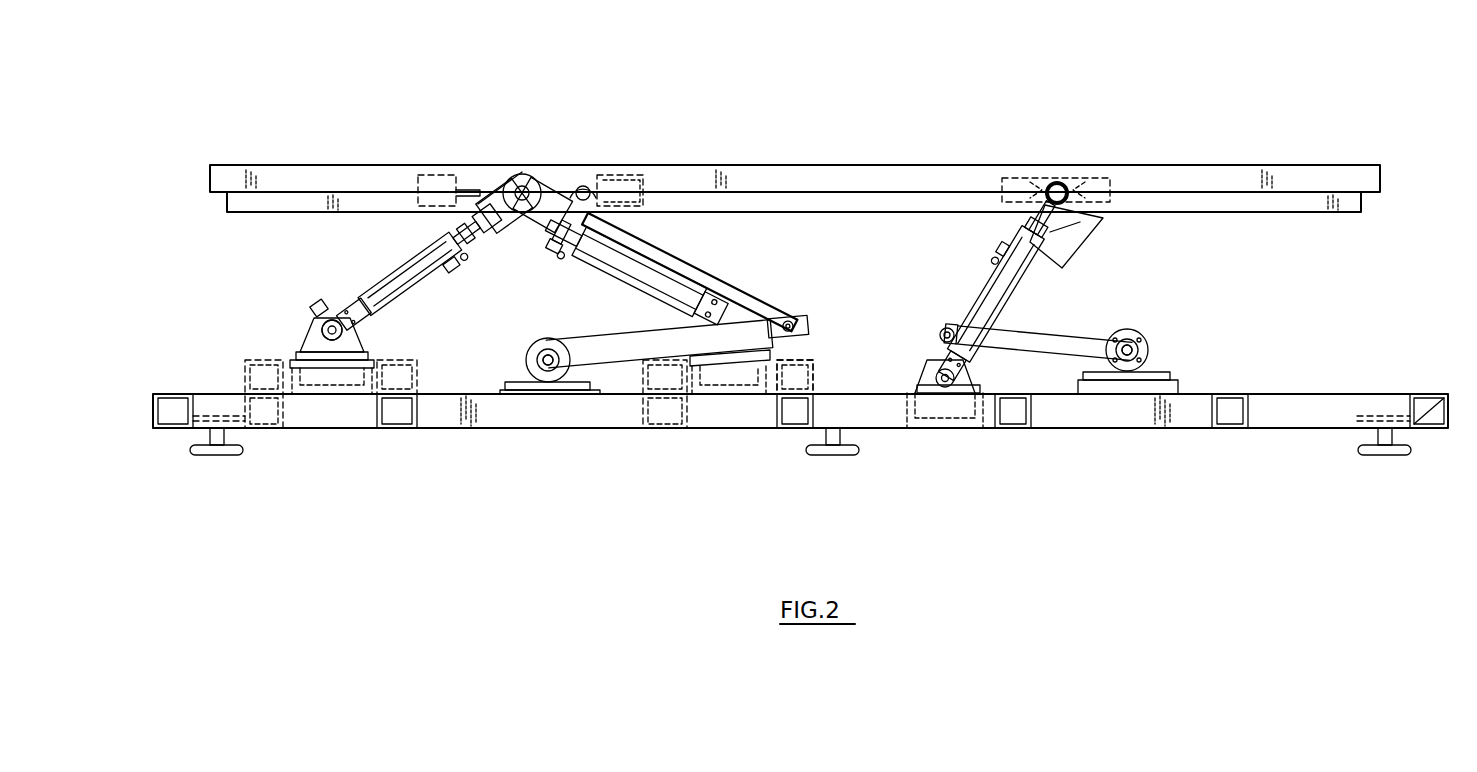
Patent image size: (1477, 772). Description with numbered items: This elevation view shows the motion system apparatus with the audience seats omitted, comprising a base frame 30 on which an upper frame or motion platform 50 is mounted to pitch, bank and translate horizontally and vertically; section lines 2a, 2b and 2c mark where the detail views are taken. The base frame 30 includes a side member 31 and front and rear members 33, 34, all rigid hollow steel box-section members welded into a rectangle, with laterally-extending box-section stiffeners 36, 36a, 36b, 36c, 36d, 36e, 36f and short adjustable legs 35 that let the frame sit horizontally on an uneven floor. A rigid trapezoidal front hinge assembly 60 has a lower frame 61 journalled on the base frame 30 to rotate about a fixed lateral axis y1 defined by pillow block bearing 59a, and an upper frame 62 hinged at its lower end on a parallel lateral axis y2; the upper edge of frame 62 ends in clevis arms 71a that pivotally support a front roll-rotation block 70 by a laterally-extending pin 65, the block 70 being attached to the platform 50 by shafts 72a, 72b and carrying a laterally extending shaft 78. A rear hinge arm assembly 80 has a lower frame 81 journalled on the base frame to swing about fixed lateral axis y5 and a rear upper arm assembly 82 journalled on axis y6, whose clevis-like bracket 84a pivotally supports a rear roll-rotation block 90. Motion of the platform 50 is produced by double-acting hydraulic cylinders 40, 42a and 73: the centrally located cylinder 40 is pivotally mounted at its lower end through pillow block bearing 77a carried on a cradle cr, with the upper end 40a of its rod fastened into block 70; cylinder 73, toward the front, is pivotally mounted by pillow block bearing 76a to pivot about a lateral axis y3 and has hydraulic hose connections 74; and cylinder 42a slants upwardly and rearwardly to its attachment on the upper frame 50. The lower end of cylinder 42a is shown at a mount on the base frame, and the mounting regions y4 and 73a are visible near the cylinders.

The base frame 30 is at (1228, 340).
The left side member 31 is at (520, 426).
The front member 33 is at (178, 394).
The rear member 34 is at (1432, 394).
The adjustable legs 35 is at (205, 445).
The laterally-extending stiffener 36 is at (322, 326).
The laterally-extending stiffener 36a is at (287, 432).
The laterally-extending stiffener 36b is at (410, 430).
The laterally-extending stiffener 36c is at (685, 432).
The laterally-extending stiffener 36d is at (798, 430).
The laterally-extending stiffener 36e is at (1033, 430).
The laterally-extending stiffener 36f is at (1220, 430).
The hydraulic cylinder 40 is at (652, 272).
The upper end of cylinder rod 40a is at (542, 228).
The hydraulic cylinder 42a is at (1002, 272).
The motion platform 50 is at (1362, 212).
The pillow block bearing 59a is at (541, 342).
The front hinge assembly 60 is at (768, 283).
The lower frame 61 is at (650, 338).
The upper frame 62 is at (714, 276).
The pin 65 is at (586, 186).
The front roll-rotation block 70 is at (500, 185).
The clevis arm 71a is at (643, 202).
The shaft 72a is at (458, 180).
The shaft 72b is at (600, 178).
The hydraulic cylinder 73 is at (372, 318).
The clevis block 73a is at (505, 226).
The hydraulic hose connections 74 is at (318, 302).
The pillow block bearing 76a is at (330, 352).
The pillow block bearing 77a is at (792, 358).
The laterally extending shaft means 78 is at (526, 180).
The rear hinge arm assembly 80 is at (1082, 313).
The lower frame 81 is at (1112, 332).
The rear upper arm assembly 82 is at (1062, 244).
The clevis-like bracket 84a is at (1086, 236).
The rear roll-rotation block 90 is at (1112, 178).
The cradle cr is at (813, 362).
The laterally-extending axis y1 is at (543, 362).
The laterally-extending axis y2 is at (796, 322).
The lateral axis y3 is at (337, 318).
The pivot axis y4 is at (960, 377).
The laterally-extending axis y5 is at (1140, 352).
The axis y6 is at (943, 330).
The section line 2a is at (205, 302).
The section line 2b is at (408, 43).
The section line 2c is at (942, 43).